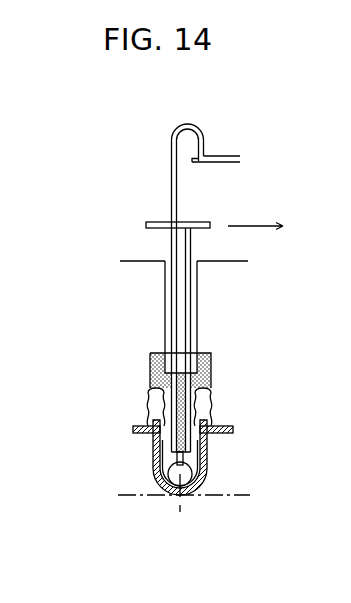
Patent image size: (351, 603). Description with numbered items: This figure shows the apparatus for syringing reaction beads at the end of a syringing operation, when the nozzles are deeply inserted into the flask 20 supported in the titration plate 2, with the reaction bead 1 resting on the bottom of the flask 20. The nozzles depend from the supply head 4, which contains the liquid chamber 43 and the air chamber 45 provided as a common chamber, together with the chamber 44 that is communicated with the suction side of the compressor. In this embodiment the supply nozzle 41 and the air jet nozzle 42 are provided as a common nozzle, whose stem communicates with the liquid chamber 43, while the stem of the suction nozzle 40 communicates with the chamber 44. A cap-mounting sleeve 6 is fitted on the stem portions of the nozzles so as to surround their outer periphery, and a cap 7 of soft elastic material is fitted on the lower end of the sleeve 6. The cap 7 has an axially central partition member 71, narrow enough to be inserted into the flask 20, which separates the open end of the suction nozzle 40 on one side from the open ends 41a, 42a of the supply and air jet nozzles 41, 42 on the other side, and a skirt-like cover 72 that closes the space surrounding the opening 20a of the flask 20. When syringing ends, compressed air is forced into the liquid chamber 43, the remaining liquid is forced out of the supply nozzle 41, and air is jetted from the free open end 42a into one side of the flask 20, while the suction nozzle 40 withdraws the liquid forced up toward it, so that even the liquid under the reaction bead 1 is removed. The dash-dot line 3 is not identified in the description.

The reaction bead 1 is at (185, 507).
The titration plate 2 is at (221, 441).
The reference line 3 is at (247, 493).
The supply head 4 is at (227, 263).
The cap-mounting sleeve 6 is at (165, 282).
The cap 7 is at (213, 367).
The flask 20 is at (192, 460).
The opening of the flask 20a is at (210, 412).
The suction nozzle 40 is at (190, 320).
The supply nozzle 41 is at (177, 186).
The air jet nozzle 42 is at (239, 288).
The open end of the supply nozzle 41a is at (172, 458).
The free open end of the air jet nozzle 42a is at (112, 429).
The liquid chamber 43 is at (238, 160).
The air chamber 45 is at (261, 145).
The chamber 44 is at (190, 221).
The partition member 71 is at (158, 466).
The skirt-like cover 72 is at (217, 400).